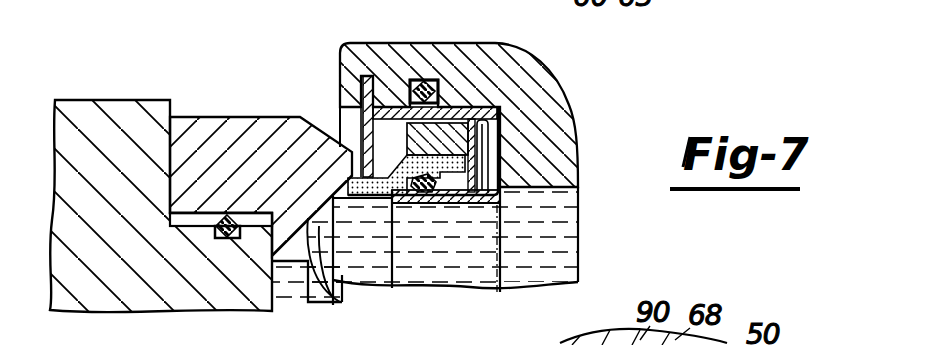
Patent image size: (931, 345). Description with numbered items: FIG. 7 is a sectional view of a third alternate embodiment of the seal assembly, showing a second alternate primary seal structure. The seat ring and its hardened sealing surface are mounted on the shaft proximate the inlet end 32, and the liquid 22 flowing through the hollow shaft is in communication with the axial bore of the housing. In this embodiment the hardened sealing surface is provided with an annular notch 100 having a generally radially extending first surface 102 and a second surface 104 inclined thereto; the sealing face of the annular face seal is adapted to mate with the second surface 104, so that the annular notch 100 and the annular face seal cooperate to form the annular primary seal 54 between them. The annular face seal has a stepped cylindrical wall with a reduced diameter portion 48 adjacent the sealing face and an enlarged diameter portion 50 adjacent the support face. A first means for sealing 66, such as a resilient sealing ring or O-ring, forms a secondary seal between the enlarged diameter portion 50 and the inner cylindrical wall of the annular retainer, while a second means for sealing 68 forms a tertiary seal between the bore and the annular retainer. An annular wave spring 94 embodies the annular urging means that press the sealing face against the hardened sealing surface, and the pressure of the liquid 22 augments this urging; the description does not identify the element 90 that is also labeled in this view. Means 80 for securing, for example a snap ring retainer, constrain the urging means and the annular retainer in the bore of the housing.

The liquid 22 is at (473, 203).
The inlet end 32 is at (212, 292).
The reduced diameter portion 48 is at (372, 203).
The enlarged diameter portion 50 is at (565, 229).
The annular primary seal 54 is at (338, 200).
The first means for sealing 66 is at (443, 185).
The second means for sealing 68 is at (423, 80).
The means for securing 80 is at (368, 44).
The seal case 90 is at (427, 88).
The annular wave spring 94 is at (488, 150).
The annular notch 100 is at (333, 305).
The first surface 102 is at (307, 302).
The second surface 104 is at (338, 202).